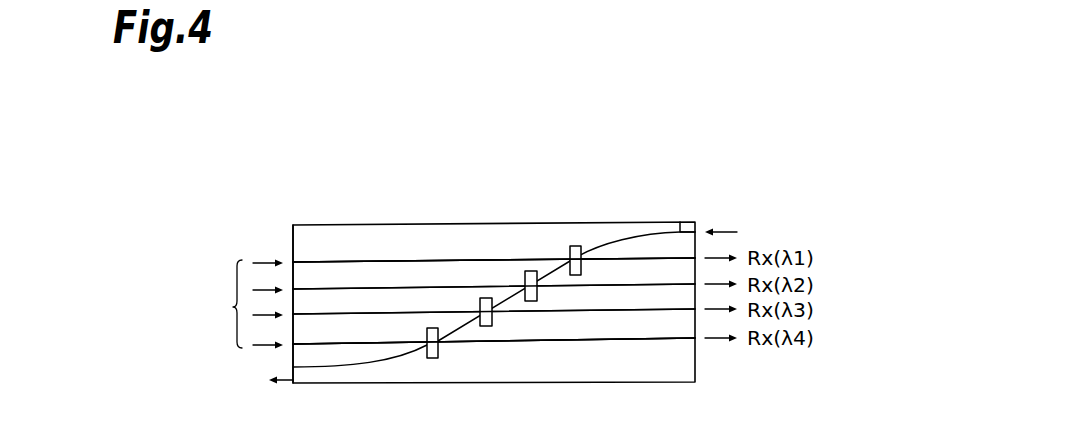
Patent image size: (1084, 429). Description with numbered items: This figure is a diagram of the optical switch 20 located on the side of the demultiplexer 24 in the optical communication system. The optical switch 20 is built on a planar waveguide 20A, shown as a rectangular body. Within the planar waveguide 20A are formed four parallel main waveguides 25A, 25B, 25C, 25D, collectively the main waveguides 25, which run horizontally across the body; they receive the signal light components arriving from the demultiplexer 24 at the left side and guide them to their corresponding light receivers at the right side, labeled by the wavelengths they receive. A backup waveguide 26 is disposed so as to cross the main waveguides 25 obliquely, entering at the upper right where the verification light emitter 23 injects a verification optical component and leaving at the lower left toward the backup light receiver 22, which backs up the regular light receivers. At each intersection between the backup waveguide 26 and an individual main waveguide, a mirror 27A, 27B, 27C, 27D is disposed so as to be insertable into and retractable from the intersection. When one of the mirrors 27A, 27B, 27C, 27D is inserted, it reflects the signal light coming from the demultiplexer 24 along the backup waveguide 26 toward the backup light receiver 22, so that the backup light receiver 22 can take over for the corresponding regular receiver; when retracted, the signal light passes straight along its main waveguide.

The optical switch 20 is at (662, 131).
The planar waveguide 20A is at (318, 224).
The backup light receiver 22 is at (201, 378).
The verification light emitter 23 is at (808, 230).
The demultiplexer 24 is at (172, 304).
The main waveguides 25 is at (387, 337).
The main waveguide 25A is at (312, 262).
The main waveguide 25B is at (312, 289).
The main waveguide 25C is at (312, 314).
The main waveguide 25D is at (312, 344).
The backup waveguide 26 is at (681, 222).
The mirror 27A is at (575, 246).
The mirror 27B is at (531, 271).
The mirror 27C is at (482, 298).
The mirror 27D is at (433, 328).